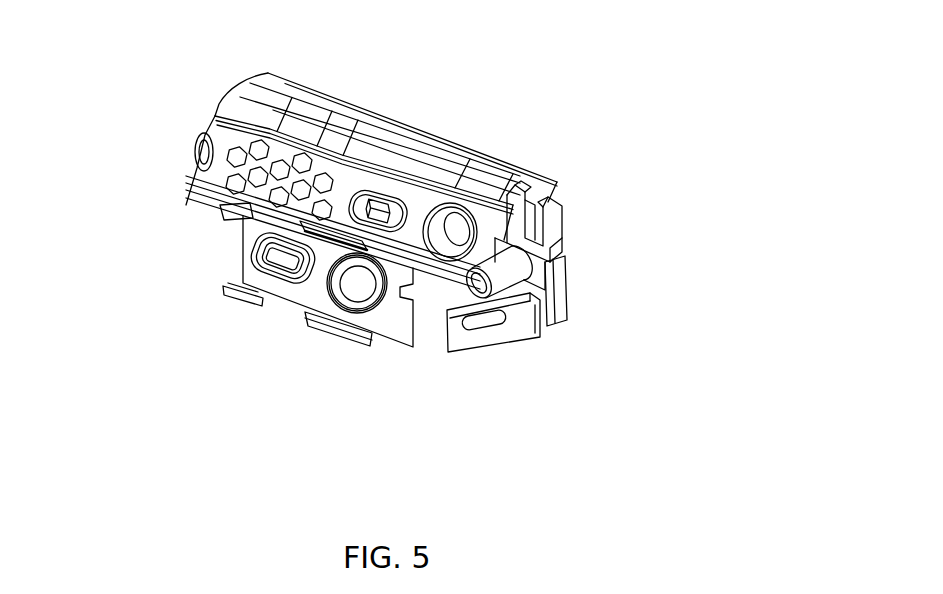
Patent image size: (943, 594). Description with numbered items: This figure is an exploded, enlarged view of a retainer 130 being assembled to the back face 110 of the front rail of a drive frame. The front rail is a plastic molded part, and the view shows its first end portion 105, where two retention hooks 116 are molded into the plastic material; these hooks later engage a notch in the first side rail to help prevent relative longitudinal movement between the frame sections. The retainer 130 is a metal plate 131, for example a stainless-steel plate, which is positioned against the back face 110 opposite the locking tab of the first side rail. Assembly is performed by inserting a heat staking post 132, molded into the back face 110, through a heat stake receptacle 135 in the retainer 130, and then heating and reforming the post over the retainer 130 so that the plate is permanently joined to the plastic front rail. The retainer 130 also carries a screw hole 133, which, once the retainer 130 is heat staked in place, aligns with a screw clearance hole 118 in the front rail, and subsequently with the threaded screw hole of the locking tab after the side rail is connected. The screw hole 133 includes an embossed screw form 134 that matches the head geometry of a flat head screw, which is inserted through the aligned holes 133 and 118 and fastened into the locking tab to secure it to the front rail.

The first end portion 105 is at (366, 252).
The back face 110 is at (243, 217).
The retention hooks 116 is at (553, 195).
The screw clearance hole 118 is at (460, 242).
The retainer 130 is at (240, 303).
The metal plate 131 is at (317, 302).
The heat staking post 132 is at (355, 193).
The screw hole 133 is at (370, 311).
The embossed screw form 134 is at (357, 316).
The heat stake receptacle 135 is at (268, 266).